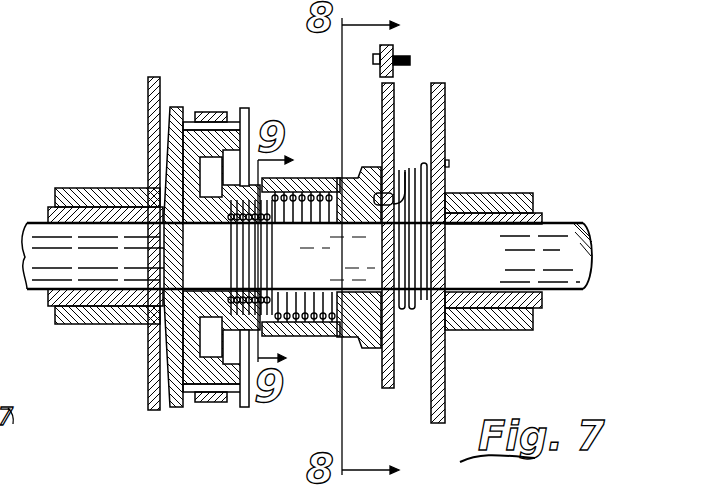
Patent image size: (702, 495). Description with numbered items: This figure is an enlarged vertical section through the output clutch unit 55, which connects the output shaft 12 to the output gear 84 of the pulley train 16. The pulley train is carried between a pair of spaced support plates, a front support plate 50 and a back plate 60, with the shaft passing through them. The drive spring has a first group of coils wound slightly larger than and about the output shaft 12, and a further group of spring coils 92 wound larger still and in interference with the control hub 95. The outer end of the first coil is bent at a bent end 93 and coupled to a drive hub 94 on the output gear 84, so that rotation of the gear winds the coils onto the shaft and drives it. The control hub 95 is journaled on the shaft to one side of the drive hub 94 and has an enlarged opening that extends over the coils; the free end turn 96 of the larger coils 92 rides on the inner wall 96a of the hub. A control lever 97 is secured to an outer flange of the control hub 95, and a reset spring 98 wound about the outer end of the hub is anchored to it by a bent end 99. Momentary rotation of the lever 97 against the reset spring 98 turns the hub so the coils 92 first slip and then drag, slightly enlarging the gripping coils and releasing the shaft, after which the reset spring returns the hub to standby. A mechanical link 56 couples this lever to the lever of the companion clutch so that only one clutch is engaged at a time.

The output shaft 12 is at (33, 224).
The pulley train 16 is at (253, 98).
The support plate 50 is at (148, 93).
The output clutch unit 55 is at (316, 86).
The mechanical link 56 is at (406, 58).
The back plate 60 is at (445, 104).
The output gear 84 is at (242, 410).
The spring coils 92 is at (320, 336).
The bent end 93 is at (219, 233).
The drive hub 94 is at (222, 200).
The control hub 95 is at (365, 352).
The free end turn 96 is at (337, 190).
The inner wall 96a is at (285, 195).
The control lever 97 is at (393, 112).
The reset spring 98 is at (440, 262).
The bent end 99 is at (393, 188).